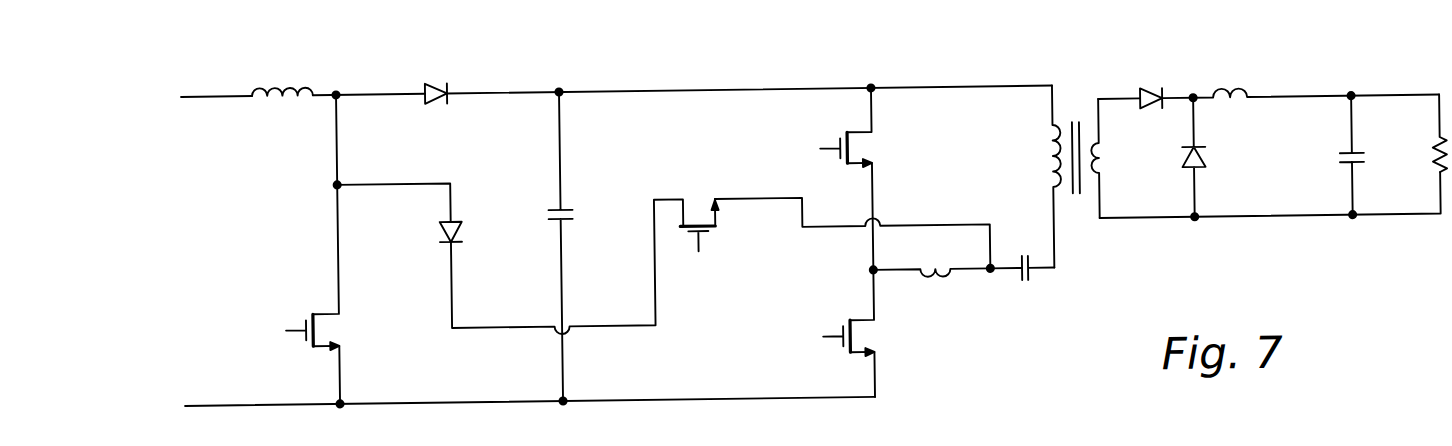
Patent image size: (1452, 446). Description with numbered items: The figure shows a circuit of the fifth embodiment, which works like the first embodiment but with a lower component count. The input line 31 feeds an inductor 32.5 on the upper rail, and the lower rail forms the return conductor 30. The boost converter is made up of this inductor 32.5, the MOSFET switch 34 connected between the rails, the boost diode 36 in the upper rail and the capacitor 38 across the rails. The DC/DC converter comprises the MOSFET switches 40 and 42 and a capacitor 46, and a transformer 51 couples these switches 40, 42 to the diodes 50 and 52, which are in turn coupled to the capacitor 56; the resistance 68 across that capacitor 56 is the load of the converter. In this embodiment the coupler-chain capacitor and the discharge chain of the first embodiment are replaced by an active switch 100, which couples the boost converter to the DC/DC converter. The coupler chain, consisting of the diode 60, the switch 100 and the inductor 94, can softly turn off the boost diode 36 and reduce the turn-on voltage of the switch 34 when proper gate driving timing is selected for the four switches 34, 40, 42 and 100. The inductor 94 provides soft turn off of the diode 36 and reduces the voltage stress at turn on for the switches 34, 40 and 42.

The return (ground) conductor 30 is at (244, 402).
The input conductor 31 is at (223, 93).
The input inductor 32.5 is at (289, 76).
The MOSFET switch 34 is at (341, 325).
The boost diode 36 is at (436, 82).
The capacitor 38 is at (567, 222).
The MOSFET switch 40 is at (872, 341).
The MOSFET switch 42 is at (859, 152).
The capacitor 46 is at (1028, 291).
The diode 50 is at (1153, 95).
The transformer T51 with windings W51 and W52 51 is at (1078, 134).
The diode 52 is at (1206, 166).
The capacitor 56 is at (1332, 167).
The diode 60 is at (459, 230).
The resistance 68 is at (1429, 168).
The inductor 94 is at (945, 283).
The active switch 100 is at (695, 202).